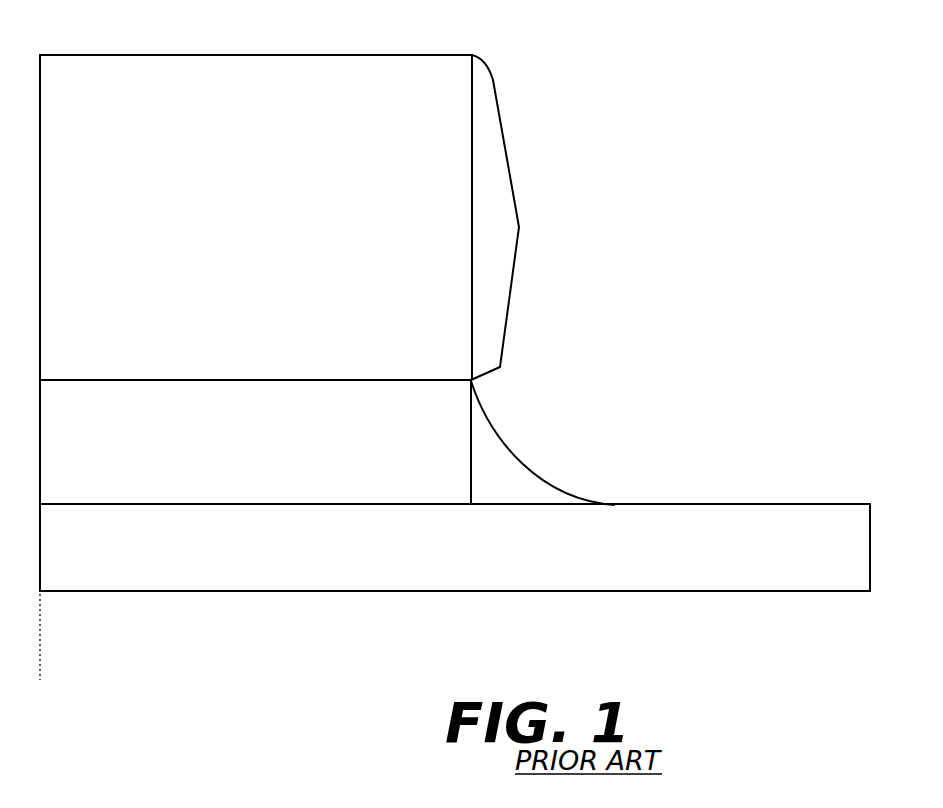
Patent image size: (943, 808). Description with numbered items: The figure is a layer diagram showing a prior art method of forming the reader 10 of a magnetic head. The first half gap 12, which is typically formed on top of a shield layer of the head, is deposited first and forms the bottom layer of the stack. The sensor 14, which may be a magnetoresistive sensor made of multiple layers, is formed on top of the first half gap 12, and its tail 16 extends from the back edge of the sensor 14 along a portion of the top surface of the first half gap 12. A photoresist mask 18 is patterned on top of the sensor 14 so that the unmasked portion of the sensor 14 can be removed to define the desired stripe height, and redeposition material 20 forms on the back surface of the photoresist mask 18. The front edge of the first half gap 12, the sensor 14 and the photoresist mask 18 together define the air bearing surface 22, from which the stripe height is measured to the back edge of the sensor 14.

The reader 10 is at (626, 118).
The first half gap 12 is at (436, 570).
The sensor 14 is at (270, 447).
The tail 16 is at (505, 482).
The photoresist mask 18 is at (285, 220).
The redeposition material 20 is at (505, 240).
The air bearing surface 22 is at (40, 661).